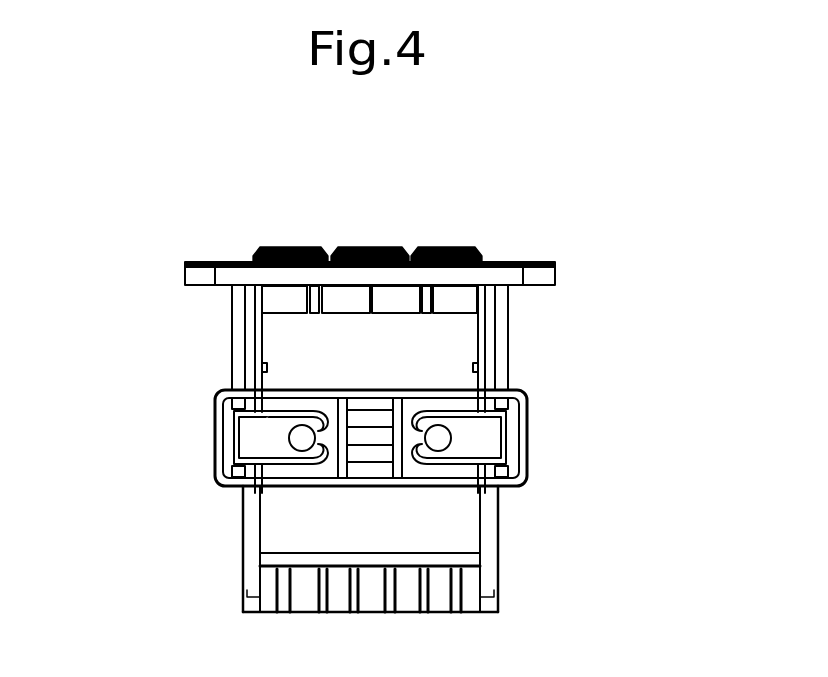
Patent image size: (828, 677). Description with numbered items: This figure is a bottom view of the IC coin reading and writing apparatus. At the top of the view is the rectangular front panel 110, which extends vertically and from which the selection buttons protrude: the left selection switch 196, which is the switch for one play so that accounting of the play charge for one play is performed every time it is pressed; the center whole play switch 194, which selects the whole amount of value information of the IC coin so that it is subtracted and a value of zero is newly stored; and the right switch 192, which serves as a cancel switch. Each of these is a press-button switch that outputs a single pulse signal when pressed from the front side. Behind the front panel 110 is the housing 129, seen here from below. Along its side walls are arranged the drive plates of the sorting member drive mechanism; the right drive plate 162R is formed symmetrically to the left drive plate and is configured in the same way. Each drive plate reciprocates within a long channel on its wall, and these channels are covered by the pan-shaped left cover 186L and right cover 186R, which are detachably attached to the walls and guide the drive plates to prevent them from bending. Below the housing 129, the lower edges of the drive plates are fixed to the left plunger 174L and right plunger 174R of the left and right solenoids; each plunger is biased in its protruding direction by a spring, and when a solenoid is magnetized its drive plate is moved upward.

The front panel 110 is at (318, 254).
The housing 129 is at (309, 337).
The right drive plate 162R is at (360, 404).
The left plunger 174L is at (187, 538).
The right plunger 174R is at (554, 538).
The left cover 186L is at (199, 437).
The right cover 186R is at (548, 437).
The right switch 192 is at (448, 212).
The whole play switch 194 is at (368, 204).
The left selection switch 196 is at (276, 210).